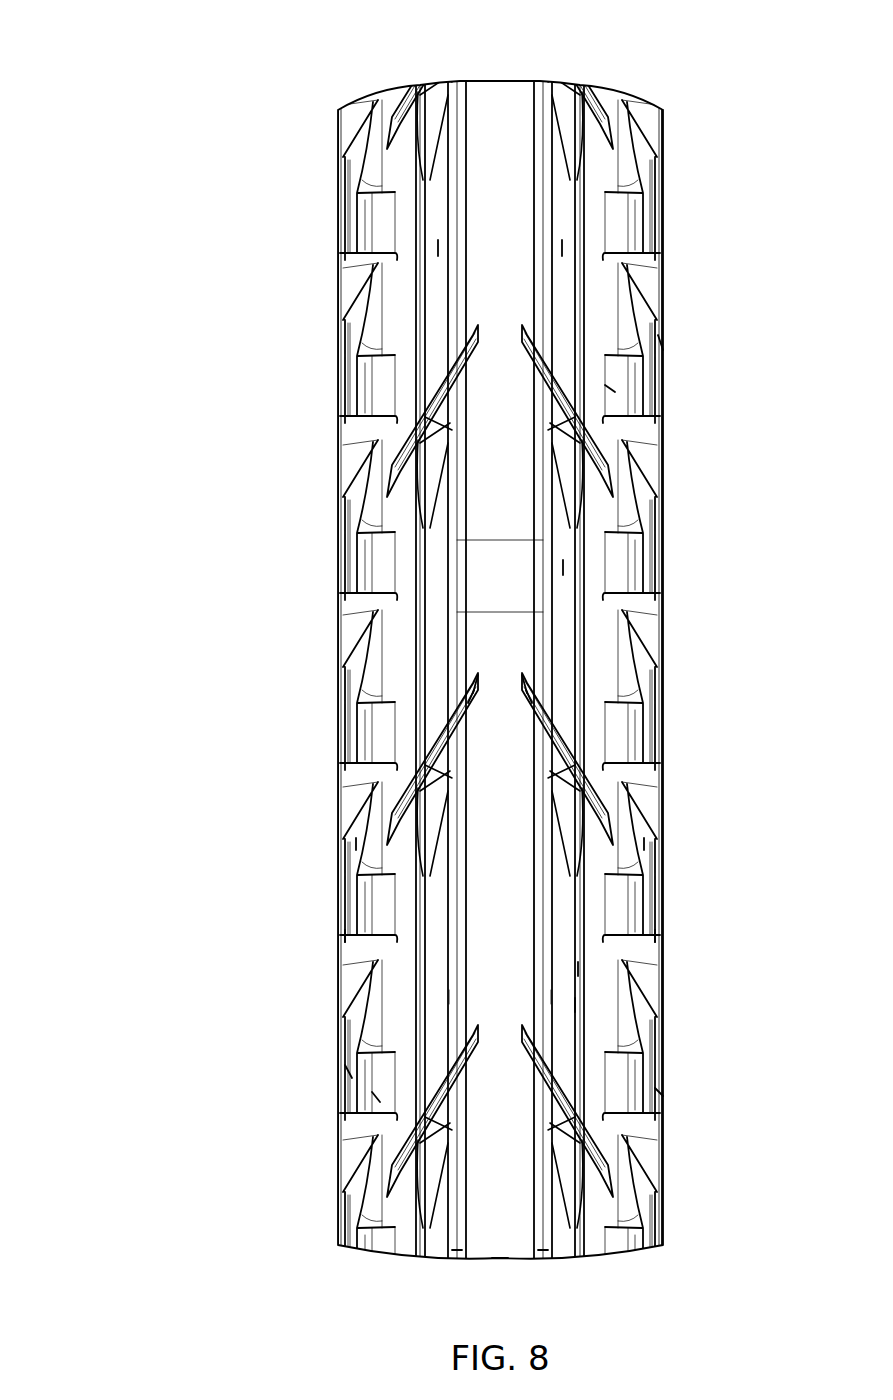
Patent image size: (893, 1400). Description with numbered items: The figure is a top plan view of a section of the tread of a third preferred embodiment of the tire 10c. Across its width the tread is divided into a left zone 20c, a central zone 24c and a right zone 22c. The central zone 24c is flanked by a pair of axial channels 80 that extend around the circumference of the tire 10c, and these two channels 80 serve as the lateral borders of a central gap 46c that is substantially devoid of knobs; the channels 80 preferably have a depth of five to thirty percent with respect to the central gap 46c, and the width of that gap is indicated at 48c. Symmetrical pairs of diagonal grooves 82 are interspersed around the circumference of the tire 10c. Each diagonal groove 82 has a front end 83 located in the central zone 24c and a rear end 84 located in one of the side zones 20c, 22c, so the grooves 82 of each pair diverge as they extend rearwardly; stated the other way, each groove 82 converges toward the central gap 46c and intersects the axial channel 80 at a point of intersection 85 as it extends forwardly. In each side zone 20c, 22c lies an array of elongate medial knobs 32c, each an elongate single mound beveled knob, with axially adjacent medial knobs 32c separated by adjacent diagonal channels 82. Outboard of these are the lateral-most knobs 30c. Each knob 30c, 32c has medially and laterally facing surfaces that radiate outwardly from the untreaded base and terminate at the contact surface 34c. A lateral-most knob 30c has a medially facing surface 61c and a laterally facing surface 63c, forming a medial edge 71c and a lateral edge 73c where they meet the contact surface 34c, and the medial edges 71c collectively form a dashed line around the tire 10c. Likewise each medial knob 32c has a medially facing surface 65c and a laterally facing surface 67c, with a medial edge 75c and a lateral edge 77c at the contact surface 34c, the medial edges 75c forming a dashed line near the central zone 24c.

The tire 10c is at (87, 92).
The left zone 20c is at (455, 72).
The right zone 22c is at (547, 72).
The central zone 24c is at (540, 52).
The lateral-most knob 30c is at (345, 936).
The medial knob 32c is at (438, 248).
The contact surface 34c is at (565, 566).
The central gap 46c is at (502, 1274).
The groove width 48c is at (449, 997).
The medially facing surface 61c is at (612, 389).
The laterally facing surface 63c is at (668, 344).
The medially facing surface 65c is at (455, 545).
The laterally facing surface 67c is at (580, 969).
The medial edge 71c is at (378, 1097).
The lateral edge 73c is at (350, 1072).
The medial edge 75c is at (453, 612).
The lateral edge 77c is at (577, 1004).
The axial channel 80 is at (463, 1272).
The diagonal groove 82 is at (442, 757).
The front end 83 is at (473, 693).
The rear end 84 is at (356, 843).
The point of intersection 85 is at (468, 703).